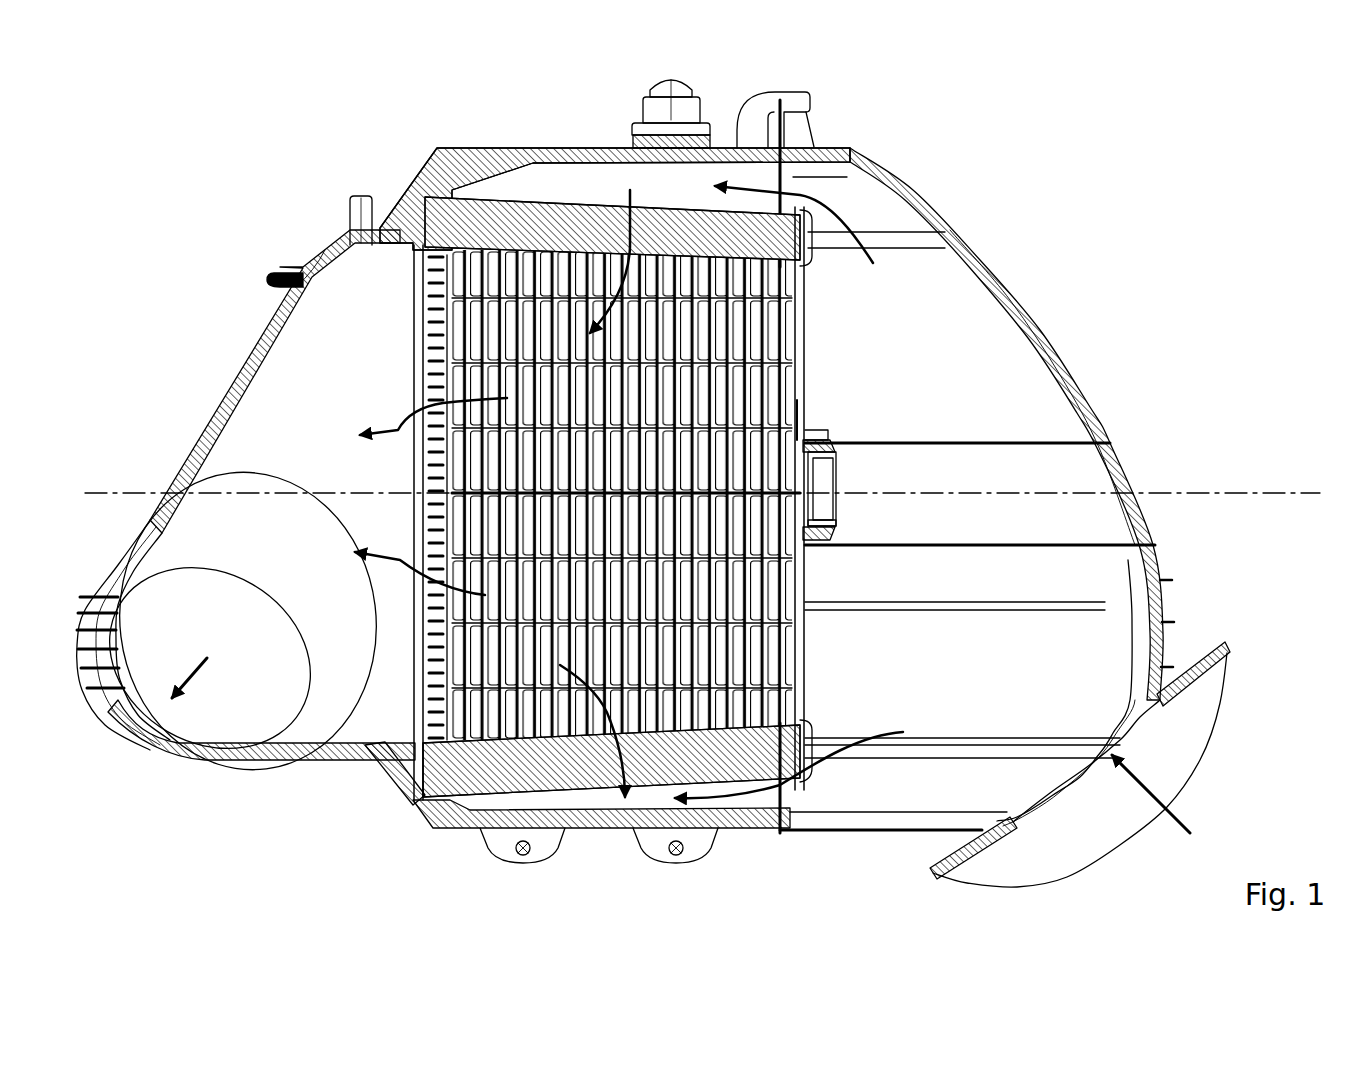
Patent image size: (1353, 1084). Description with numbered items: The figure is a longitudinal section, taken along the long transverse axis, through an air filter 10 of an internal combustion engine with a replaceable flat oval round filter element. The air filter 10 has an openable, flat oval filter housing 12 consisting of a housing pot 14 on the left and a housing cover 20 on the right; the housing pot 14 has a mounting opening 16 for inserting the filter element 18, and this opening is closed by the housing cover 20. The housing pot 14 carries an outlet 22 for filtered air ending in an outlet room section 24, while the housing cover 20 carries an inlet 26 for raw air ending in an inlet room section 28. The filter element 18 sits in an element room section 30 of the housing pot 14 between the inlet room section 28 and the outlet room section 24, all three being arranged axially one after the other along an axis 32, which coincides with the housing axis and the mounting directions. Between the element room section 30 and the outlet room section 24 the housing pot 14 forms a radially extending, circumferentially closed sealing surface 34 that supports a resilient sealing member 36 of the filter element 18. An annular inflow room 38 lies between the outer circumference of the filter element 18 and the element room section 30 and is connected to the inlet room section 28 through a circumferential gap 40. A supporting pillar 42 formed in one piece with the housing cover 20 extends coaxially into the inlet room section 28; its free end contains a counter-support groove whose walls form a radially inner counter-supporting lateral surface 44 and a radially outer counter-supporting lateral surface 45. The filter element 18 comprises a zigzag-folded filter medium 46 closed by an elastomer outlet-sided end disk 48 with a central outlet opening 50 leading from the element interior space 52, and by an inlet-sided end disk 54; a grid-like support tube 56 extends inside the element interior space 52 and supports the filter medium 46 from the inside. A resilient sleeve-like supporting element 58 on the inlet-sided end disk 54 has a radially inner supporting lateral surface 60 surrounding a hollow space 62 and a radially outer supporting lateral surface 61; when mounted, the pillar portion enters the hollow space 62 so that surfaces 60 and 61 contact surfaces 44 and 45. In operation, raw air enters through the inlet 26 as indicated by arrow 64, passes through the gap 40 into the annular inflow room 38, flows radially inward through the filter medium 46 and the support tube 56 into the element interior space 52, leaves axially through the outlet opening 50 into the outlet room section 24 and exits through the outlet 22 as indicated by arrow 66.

The air filter 10 is at (190, 192).
The filter housing 12 is at (430, 150).
The housing pot 14 is at (258, 330).
The mounting opening 16 is at (795, 832).
The filter element 18 is at (595, 190).
The housing cover 20 is at (1045, 318).
The outlet 22 is at (205, 770).
The outlet room section 24 is at (320, 378).
The inlet 26 is at (1170, 753).
The inlet room section 28 is at (1000, 676).
The element room section 30 is at (590, 805).
The axis 32 is at (1228, 490).
The sealing surface 34 is at (375, 760).
The sealing member 36 is at (395, 252).
The annular inflow room 38 is at (540, 180).
The circumferential gap 40 is at (792, 162).
The supporting pillar 42 is at (1000, 460).
The radially inner counter-supporting lateral surface 44 is at (838, 464).
The radially outer counter-supporting lateral surface 45 is at (835, 448).
The filter medium 46 is at (512, 225).
The outlet-sided end disk 48 is at (408, 805).
The outlet opening 50 is at (415, 482).
The element interior space 52 is at (626, 495).
The inlet-sided end disk 54 is at (800, 640).
The support tube 56 is at (432, 668).
The supporting element 58 is at (835, 436).
The radially inner supporting lateral surface 60 is at (838, 525).
The radially outer supporting lateral surface 61 is at (815, 415).
The hollow space 62 is at (815, 542).
The arrow 64 is at (1192, 825).
The arrow 66 is at (197, 663).